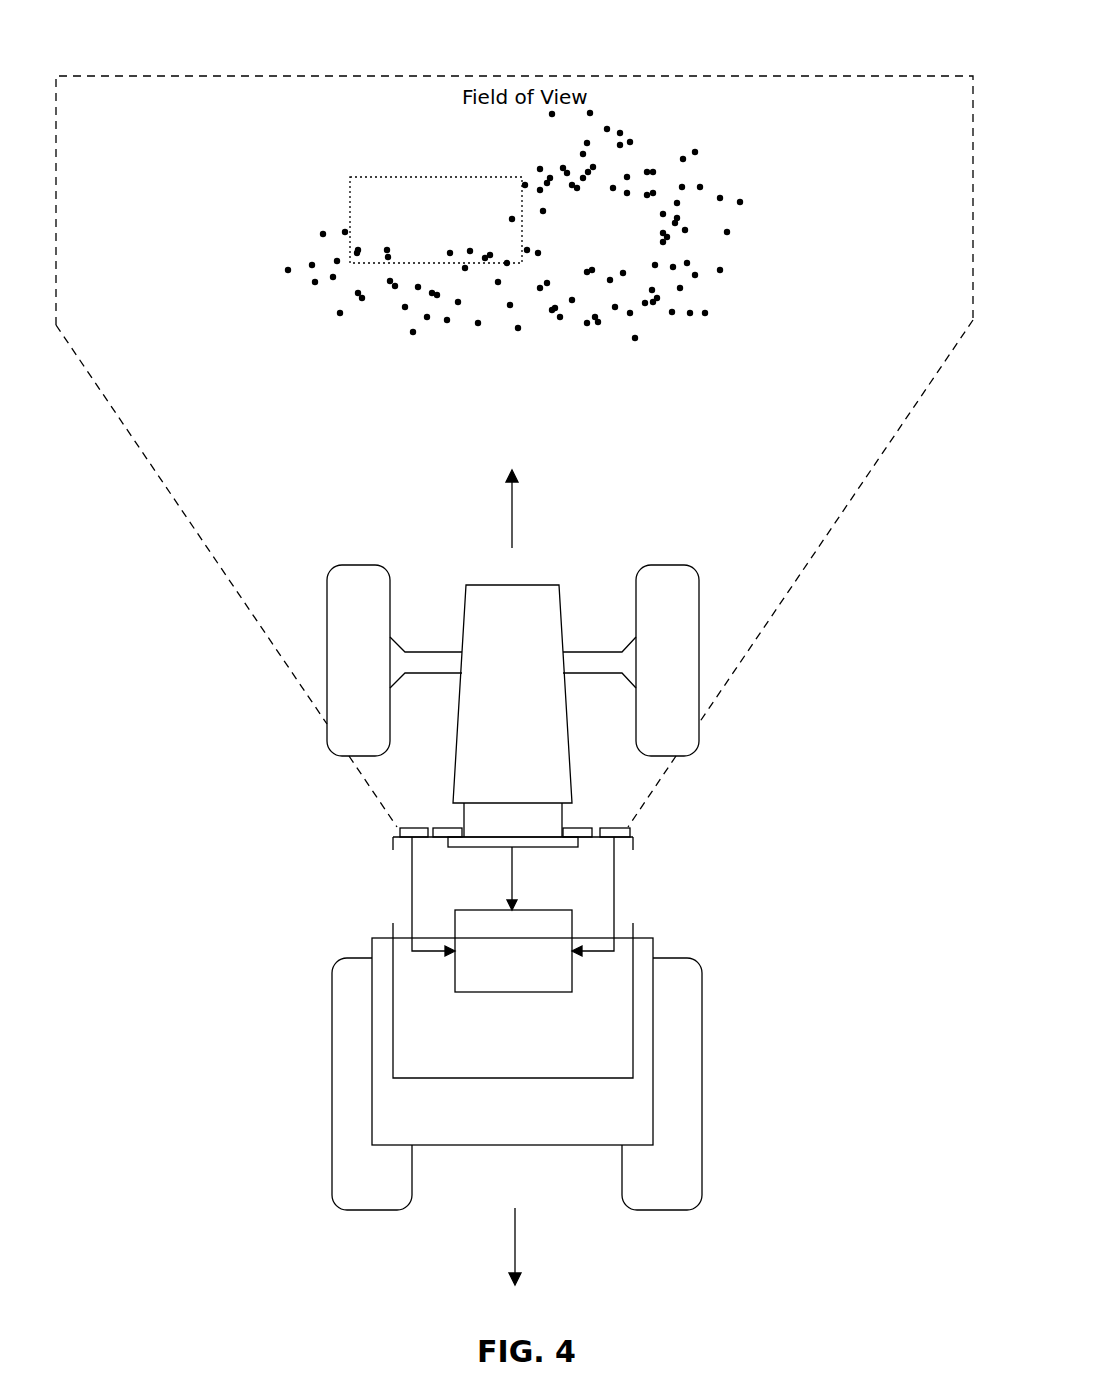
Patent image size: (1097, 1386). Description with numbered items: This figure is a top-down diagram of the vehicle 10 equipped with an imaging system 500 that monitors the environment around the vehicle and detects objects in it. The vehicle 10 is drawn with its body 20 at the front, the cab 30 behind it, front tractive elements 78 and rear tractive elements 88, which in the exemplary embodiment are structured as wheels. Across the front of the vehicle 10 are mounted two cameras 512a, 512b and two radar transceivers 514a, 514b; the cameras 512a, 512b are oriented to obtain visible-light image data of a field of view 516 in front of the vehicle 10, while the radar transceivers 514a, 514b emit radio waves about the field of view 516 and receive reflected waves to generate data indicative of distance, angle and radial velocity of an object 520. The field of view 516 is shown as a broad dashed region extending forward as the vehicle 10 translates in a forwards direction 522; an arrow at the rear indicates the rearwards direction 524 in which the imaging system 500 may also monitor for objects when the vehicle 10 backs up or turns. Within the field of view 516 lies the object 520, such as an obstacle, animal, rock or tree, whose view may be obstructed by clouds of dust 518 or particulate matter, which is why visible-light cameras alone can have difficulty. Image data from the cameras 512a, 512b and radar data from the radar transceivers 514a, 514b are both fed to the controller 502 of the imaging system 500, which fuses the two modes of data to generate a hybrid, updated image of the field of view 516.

The vehicle 10 is at (424, 893).
The body 20 is at (545, 600).
The cab 30 is at (425, 1080).
The front tractive elements 78 is at (348, 566).
The rear tractive elements 88 is at (368, 1211).
The imaging system 500 is at (459, 876).
The controller 502 is at (513, 951).
The camera 512a is at (438, 828).
The camera 512b is at (580, 828).
The radar transceiver 514a is at (403, 829).
The radar transceiver 514b is at (626, 829).
The field of view 516 is at (246, 76).
The clouds of dust 518 is at (752, 240).
The object 520 is at (393, 177).
The forwards direction 522 is at (514, 510).
The rearwards direction 524 is at (517, 1244).